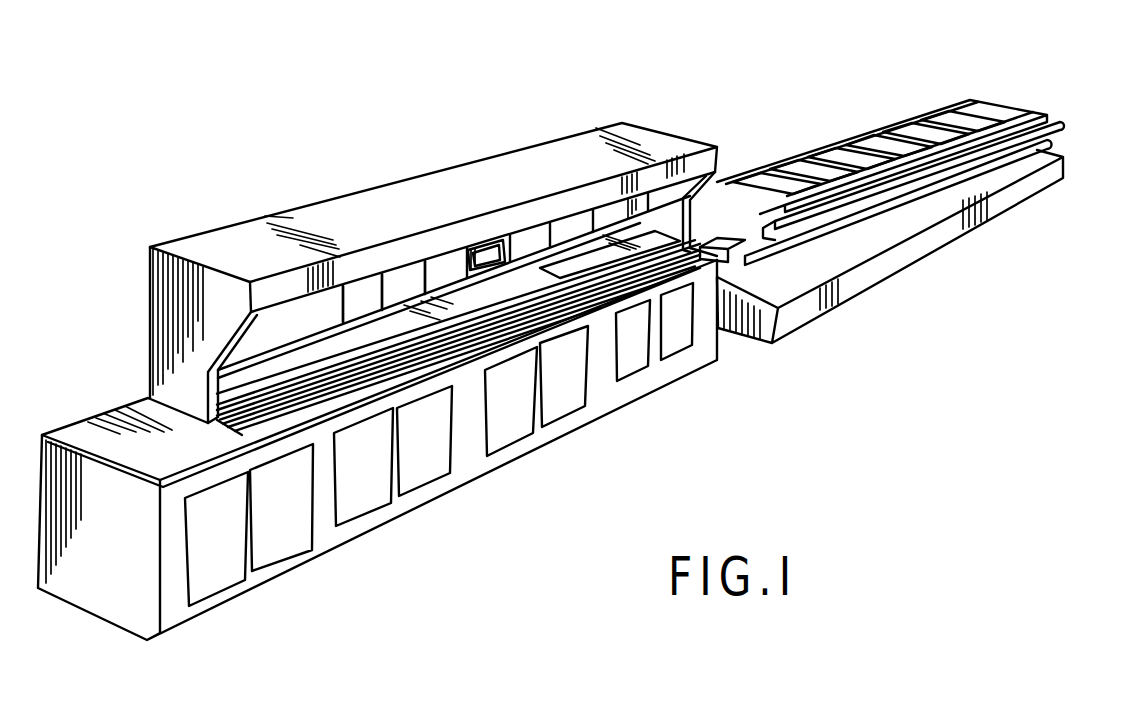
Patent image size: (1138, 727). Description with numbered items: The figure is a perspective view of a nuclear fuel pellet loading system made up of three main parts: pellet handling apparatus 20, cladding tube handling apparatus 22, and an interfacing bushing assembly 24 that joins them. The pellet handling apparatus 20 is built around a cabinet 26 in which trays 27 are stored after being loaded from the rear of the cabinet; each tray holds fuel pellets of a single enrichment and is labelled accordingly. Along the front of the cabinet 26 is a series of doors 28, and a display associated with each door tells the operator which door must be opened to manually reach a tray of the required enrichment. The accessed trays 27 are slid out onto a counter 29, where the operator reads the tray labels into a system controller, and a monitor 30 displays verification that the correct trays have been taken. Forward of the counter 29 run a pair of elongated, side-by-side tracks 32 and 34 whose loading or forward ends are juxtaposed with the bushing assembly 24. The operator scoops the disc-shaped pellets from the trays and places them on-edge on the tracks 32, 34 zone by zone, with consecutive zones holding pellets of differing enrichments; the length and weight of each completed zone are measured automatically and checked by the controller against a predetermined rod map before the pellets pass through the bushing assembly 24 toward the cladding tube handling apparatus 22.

The pellet handling apparatus 20 is at (504, 159).
The cladding tube handling apparatus 22 is at (882, 179).
The interfacing bushing assembly 24 is at (717, 243).
The cabinet 26 is at (257, 238).
The trays 27 is at (570, 263).
The doors 28 is at (445, 268).
The counter 29 is at (297, 368).
The monitor 30 is at (487, 252).
The track 32 is at (545, 304).
The track 34 is at (485, 343).